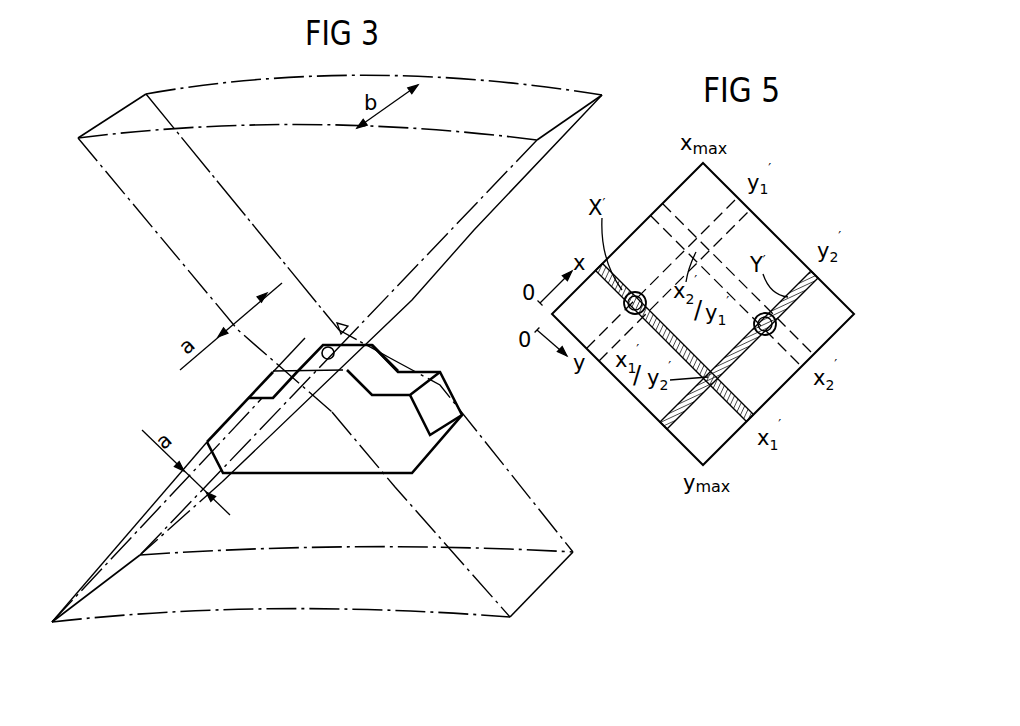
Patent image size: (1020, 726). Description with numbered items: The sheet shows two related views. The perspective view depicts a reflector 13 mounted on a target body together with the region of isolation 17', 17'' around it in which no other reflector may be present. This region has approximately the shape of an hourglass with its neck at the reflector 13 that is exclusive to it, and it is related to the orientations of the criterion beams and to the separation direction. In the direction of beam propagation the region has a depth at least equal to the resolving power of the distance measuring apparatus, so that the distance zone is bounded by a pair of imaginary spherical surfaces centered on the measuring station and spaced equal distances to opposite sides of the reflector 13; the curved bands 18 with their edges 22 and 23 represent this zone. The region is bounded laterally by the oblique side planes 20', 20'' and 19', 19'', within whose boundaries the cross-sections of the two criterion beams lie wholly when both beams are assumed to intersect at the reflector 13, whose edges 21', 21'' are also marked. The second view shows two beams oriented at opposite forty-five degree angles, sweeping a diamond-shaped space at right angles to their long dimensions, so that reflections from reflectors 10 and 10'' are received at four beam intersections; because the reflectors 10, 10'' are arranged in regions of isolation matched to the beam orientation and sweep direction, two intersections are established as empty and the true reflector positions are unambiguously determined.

In FIG. 3, the reflector 13 is at (330, 346).
In FIG. 3, the region of isolation 17' is at (281, 618).
In FIG. 3, the region of isolation 17'' is at (340, 89).
In FIG. 3, the band surface 18 is at (329, 221).
In FIG. 3, the oblique side plane 19' is at (452, 487).
In FIG. 3, the oblique side plane 19'' is at (227, 253).
In FIG. 3, the oblique side plane 20' is at (196, 480).
In FIG. 3, the oblique side plane 20'' is at (412, 288).
In FIG. 3, the edge of tool block 21' is at (412, 349).
In FIG. 3, the pointer on tool block 21'' is at (357, 296).
In FIG. 3, the edge of lower band 22 is at (528, 575).
In FIG. 3, the edge of upper band 23 is at (328, 124).
In FIG. 5, the reflector 10 is at (641, 240).
In FIG. 5, the reflector 10'' is at (815, 299).